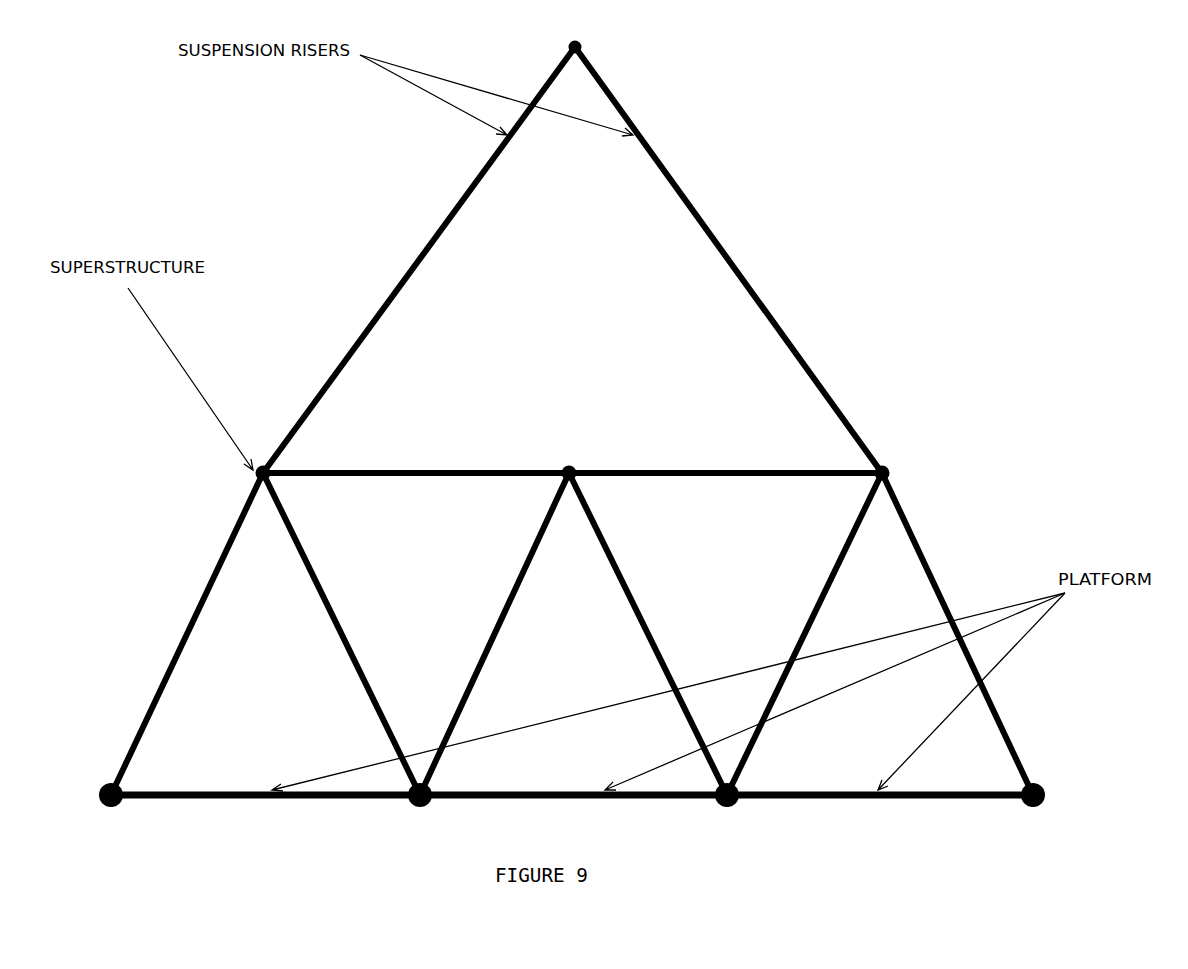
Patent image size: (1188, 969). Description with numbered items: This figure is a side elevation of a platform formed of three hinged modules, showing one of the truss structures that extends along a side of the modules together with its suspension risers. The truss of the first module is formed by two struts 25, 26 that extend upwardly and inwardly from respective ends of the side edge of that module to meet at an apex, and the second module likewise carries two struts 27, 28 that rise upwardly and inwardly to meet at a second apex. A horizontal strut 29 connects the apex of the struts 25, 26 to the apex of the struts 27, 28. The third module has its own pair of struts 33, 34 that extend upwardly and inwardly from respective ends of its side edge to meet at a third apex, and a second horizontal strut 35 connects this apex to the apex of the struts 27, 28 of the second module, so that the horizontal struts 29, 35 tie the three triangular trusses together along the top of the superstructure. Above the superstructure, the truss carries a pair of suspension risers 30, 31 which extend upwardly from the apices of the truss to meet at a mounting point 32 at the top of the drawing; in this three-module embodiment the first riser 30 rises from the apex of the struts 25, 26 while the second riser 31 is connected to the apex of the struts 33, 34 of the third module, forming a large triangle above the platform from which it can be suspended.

The strut 25 is at (194, 647).
The strut 26 is at (335, 590).
The strut 27 is at (511, 632).
The strut 28 is at (655, 616).
The horizontal strut 29 is at (398, 468).
The suspension riser 30 is at (425, 230).
The suspension riser 31 is at (711, 224).
The mounting point 32 is at (589, 59).
The strut 33 is at (824, 623).
The strut 34 is at (1019, 735).
The second horizontal strut 35 is at (646, 466).